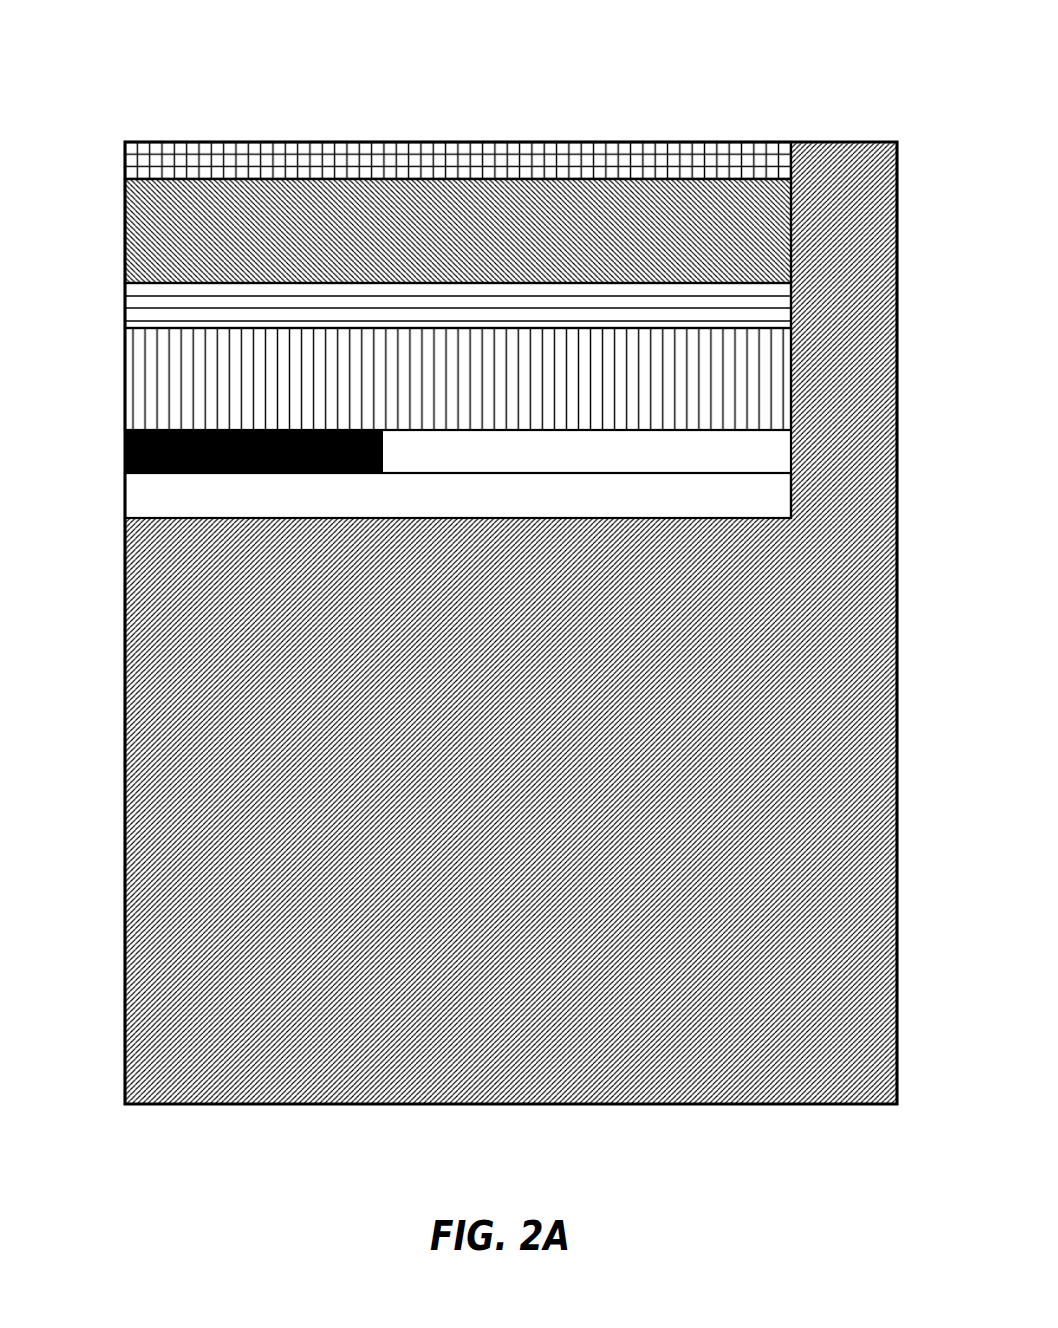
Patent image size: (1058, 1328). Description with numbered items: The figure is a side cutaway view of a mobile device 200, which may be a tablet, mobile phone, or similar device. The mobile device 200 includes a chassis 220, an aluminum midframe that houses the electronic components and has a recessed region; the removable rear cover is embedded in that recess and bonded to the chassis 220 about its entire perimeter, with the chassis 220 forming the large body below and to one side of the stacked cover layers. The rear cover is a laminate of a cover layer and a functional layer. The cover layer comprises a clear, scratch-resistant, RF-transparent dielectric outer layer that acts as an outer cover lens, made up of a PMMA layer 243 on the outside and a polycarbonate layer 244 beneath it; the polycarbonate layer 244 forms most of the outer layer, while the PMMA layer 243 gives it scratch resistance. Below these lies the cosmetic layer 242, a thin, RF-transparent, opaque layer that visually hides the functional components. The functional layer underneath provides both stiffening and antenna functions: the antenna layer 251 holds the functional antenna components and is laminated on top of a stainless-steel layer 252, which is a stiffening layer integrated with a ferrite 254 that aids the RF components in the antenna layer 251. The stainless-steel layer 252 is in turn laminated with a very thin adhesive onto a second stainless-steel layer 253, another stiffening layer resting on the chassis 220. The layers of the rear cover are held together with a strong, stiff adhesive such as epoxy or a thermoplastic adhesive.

The mobile device 200 is at (520, 24).
The chassis 220 is at (785, 1007).
The polymethyl methacrylate (PMMA) layer 243 is at (125, 153).
The polycarbonate layer 244 is at (125, 237).
The cosmetic layer 242 is at (125, 299).
The antenna layer 251 is at (125, 376).
The ferrite 254 is at (125, 448).
The stainless-steel layer 252 is at (795, 457).
The stainless-steel layer 253 is at (125, 493).